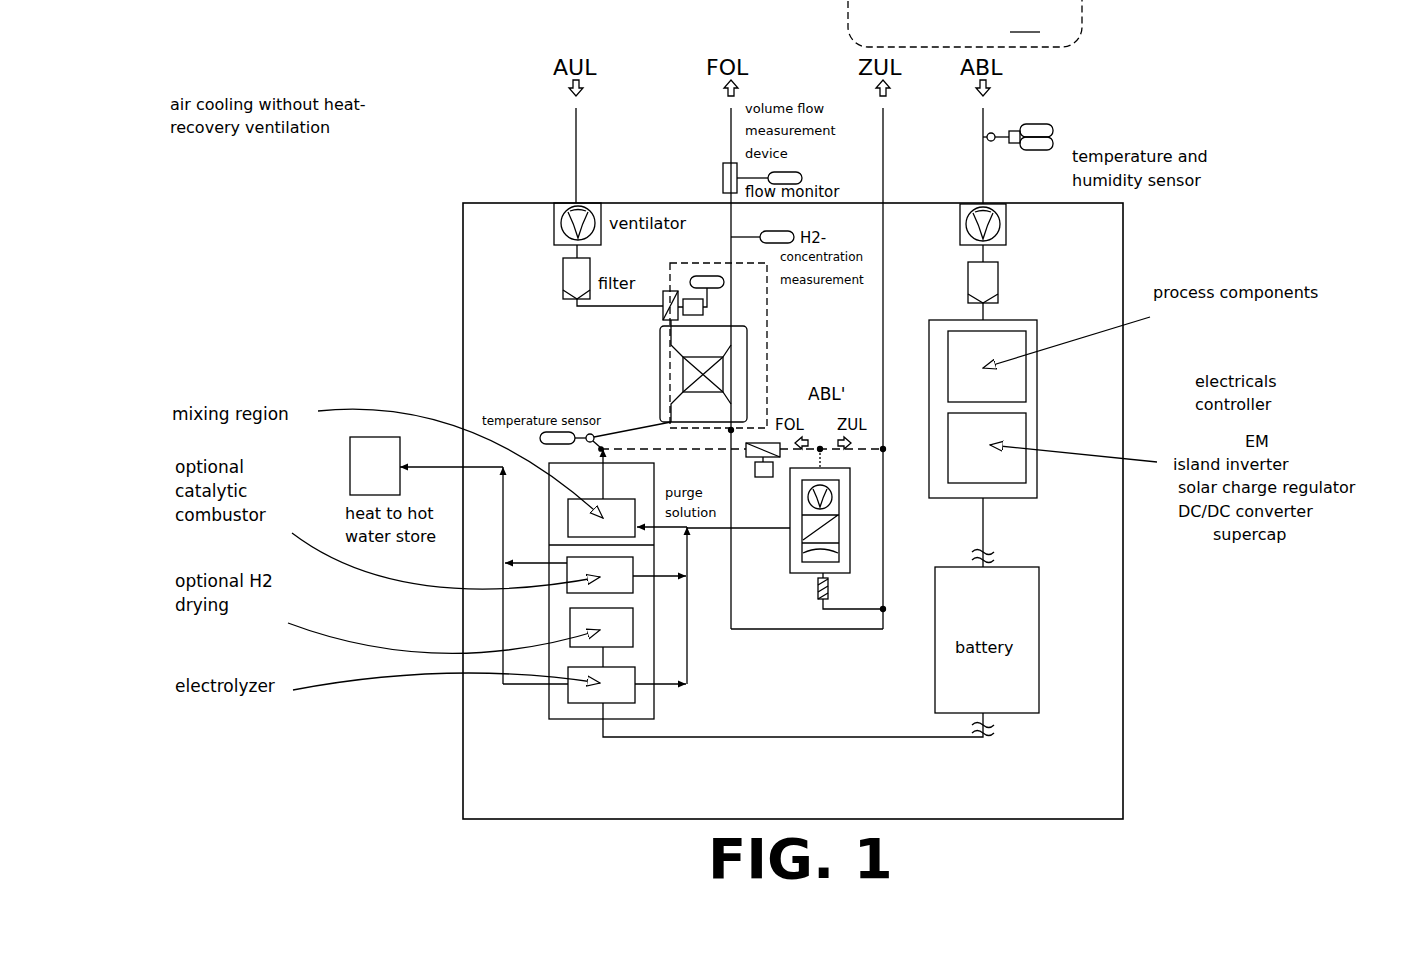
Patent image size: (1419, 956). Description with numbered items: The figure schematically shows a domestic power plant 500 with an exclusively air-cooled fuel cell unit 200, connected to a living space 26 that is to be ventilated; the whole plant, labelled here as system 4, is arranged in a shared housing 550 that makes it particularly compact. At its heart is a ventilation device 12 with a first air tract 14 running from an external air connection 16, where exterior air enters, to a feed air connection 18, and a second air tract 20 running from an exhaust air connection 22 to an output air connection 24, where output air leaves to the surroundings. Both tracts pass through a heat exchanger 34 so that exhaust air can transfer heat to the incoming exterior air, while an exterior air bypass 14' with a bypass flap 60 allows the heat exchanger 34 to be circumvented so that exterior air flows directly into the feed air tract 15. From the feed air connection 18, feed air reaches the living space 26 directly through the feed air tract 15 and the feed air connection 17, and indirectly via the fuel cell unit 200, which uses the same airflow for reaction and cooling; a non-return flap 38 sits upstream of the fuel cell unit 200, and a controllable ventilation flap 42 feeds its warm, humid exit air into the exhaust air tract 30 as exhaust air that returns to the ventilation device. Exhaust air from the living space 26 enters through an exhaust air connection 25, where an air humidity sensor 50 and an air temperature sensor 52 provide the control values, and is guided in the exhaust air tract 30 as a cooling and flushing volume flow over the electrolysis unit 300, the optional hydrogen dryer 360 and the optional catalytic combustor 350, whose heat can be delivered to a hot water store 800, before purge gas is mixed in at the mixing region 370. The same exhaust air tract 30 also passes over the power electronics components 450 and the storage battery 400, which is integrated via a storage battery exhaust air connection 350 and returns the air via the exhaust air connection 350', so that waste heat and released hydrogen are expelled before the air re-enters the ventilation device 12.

The air handling system 4 is at (662, 70).
The ventilation device 12 is at (612, 327).
The first air tract 14 is at (709, 370).
The exterior air bypass 14' is at (768, 345).
The feed air tract 15 is at (887, 300).
The external air connection 16 is at (578, 203).
The feed air connection 17 is at (885, 203).
The feed air connection 18 is at (731, 430).
The second air tract 20 is at (671, 404).
The exhaust air connection 22 is at (675, 422).
The output air connection 24 is at (727, 197).
The exhaust air connection 25 is at (993, 200).
The living space 26 is at (965, 23).
The exhaust air tract 30 is at (603, 457).
The heat exchanger 34 is at (732, 368).
The non-return flap 38 is at (820, 592).
The ventilation flap 42 is at (755, 465).
The air humidity sensor 50 is at (1060, 112).
The air temperature sensor 52 is at (1050, 143).
The bypass flap 60 is at (668, 293).
The fuel cell unit 200 is at (835, 527).
The electrolysis unit 300 is at (735, 630).
The catalytic combustor 350 is at (736, 590).
The exhaust air connection 350' is at (1030, 734).
The hydrogen dryer 360 is at (628, 628).
The mixing region 370 is at (578, 510).
The storage battery 400 is at (1030, 649).
The power electronics components 450 is at (1025, 413).
The domestic power plant 500 is at (413, 781).
The shared housing 550 is at (527, 820).
The heat to hot water store 800 is at (378, 452).